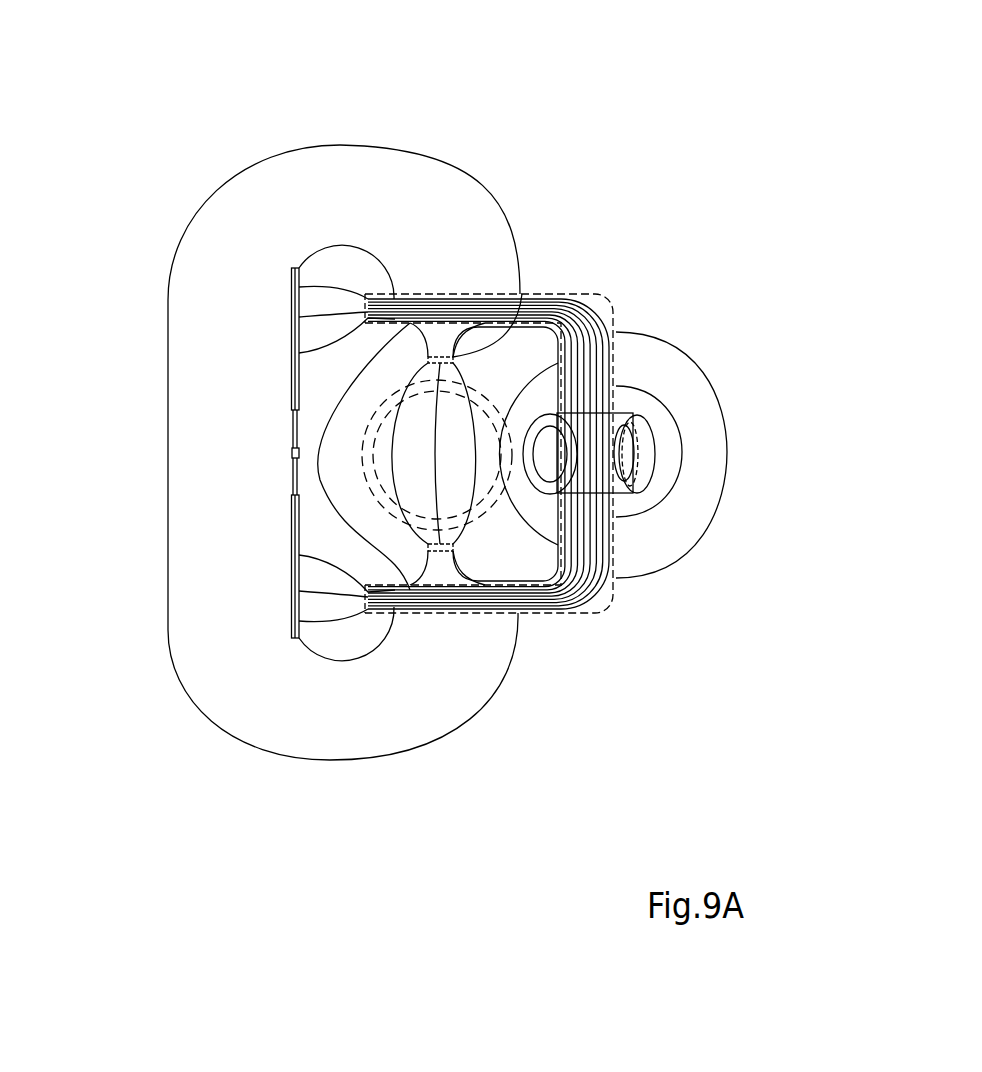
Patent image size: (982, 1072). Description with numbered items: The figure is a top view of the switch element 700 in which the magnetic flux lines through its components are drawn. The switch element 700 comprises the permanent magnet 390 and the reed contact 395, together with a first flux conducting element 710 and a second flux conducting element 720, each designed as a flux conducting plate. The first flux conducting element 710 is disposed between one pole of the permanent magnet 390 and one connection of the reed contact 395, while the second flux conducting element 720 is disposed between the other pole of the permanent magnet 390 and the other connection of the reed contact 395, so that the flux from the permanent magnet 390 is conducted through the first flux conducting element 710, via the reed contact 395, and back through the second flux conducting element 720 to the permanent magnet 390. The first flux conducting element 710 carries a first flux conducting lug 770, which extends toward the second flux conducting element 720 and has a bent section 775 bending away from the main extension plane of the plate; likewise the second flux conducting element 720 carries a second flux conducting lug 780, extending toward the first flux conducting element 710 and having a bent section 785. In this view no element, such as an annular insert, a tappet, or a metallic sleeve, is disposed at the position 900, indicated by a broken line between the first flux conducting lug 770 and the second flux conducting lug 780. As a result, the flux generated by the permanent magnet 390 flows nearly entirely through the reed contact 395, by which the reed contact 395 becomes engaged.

The switch element 700 is at (610, 183).
The first flux conducting element 710 is at (527, 296).
The second flux conducting element 720 is at (530, 613).
The first flux conducting lug 770 is at (497, 296).
The bent section 775 is at (522, 294).
The second flux conducting lug 780 is at (490, 613).
The bent section 785 is at (428, 548).
The position 900 is at (358, 493).
The permanent magnet 390 is at (616, 447).
The reed contact 395 is at (292, 448).